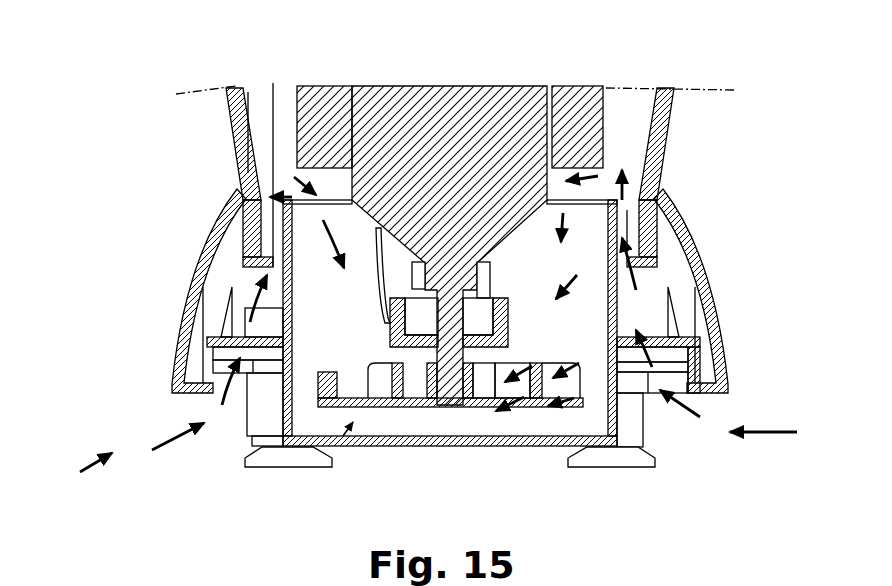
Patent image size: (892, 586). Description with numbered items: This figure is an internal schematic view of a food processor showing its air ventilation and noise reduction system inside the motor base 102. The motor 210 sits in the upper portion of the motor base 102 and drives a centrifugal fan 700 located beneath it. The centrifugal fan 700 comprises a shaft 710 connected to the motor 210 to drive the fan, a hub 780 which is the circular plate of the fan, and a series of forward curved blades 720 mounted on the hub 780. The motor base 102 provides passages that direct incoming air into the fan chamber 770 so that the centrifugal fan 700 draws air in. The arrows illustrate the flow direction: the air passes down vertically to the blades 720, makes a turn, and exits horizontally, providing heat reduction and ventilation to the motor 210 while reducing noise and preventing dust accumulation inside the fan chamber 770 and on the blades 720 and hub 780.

The motor 210 is at (455, 150).
The motor base 102 is at (643, 120).
The centrifugal fan 700 is at (343, 437).
The fan chamber 770 is at (317, 340).
The forward curved blades 720 is at (378, 387).
The hub 780 is at (410, 387).
The shaft 710 is at (457, 403).